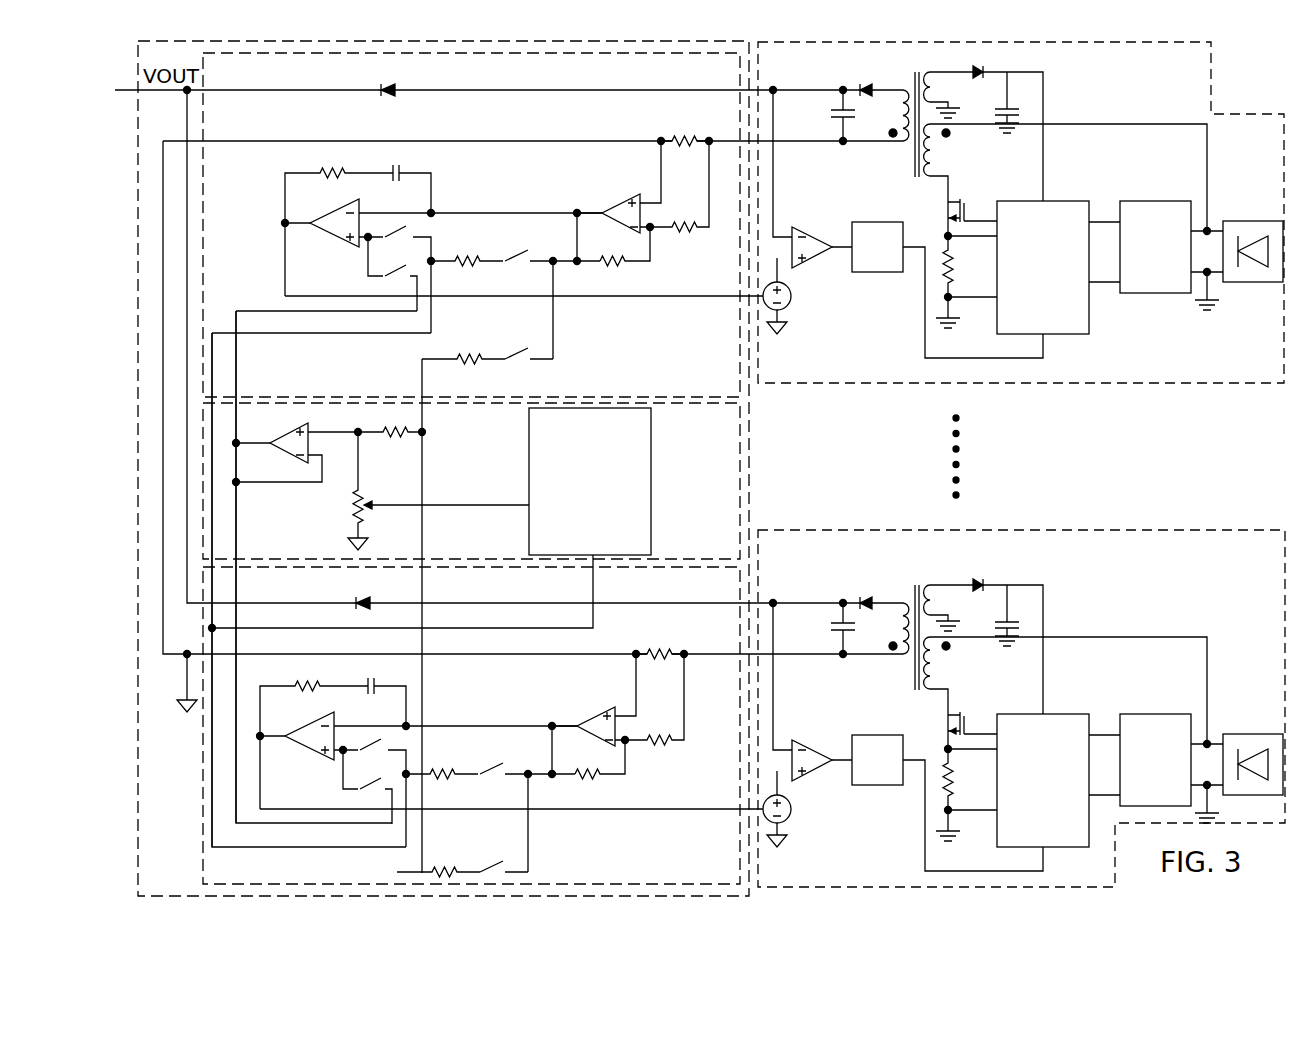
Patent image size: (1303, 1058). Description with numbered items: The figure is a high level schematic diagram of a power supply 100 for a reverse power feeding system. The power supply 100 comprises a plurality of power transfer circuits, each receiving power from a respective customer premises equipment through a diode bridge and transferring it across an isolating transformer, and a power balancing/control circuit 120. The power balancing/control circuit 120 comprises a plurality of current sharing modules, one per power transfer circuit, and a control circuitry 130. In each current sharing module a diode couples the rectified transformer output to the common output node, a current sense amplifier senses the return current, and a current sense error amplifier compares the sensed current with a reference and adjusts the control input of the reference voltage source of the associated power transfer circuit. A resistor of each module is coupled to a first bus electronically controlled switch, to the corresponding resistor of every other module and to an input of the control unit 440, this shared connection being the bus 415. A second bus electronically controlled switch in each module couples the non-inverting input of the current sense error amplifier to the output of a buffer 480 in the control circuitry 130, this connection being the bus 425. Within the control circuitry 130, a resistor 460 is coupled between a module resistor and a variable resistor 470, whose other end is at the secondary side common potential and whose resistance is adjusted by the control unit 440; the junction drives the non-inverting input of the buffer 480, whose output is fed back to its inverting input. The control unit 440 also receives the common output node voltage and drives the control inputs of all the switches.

The power supply 100 is at (1270, 65).
The power balancing/control circuit 120 is at (758, 405).
The control circuitry 130 is at (432, 557).
The bus 415 is at (412, 337).
The bus 425 is at (238, 383).
The control unit 440 is at (529, 462).
The resistor 460 is at (402, 428).
The variable resistor 470 is at (350, 511).
The buffer 480 is at (278, 452).